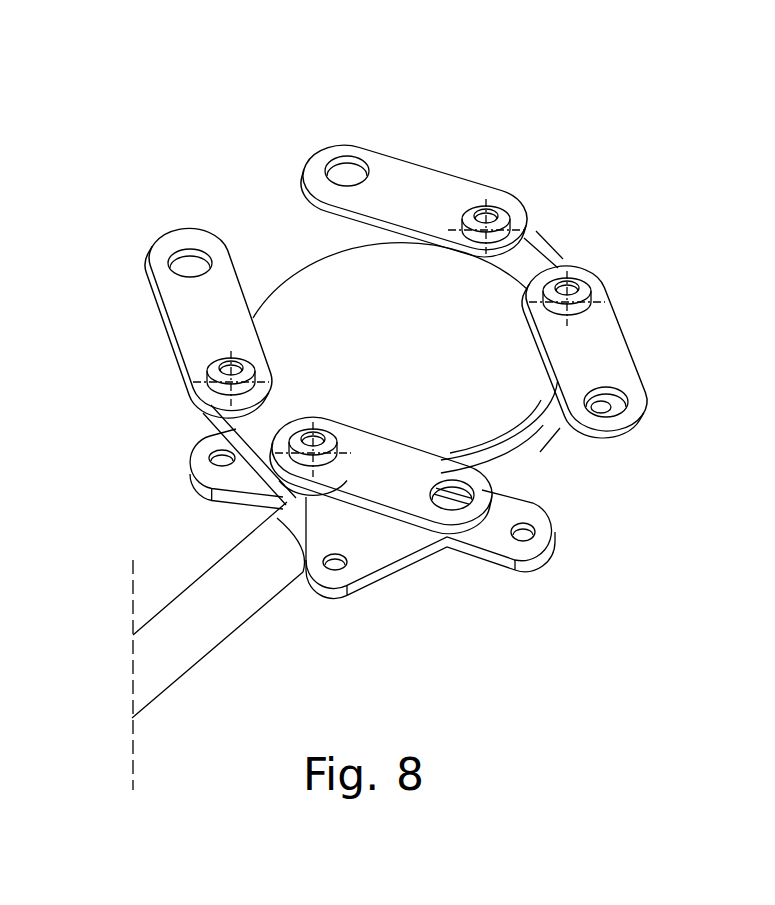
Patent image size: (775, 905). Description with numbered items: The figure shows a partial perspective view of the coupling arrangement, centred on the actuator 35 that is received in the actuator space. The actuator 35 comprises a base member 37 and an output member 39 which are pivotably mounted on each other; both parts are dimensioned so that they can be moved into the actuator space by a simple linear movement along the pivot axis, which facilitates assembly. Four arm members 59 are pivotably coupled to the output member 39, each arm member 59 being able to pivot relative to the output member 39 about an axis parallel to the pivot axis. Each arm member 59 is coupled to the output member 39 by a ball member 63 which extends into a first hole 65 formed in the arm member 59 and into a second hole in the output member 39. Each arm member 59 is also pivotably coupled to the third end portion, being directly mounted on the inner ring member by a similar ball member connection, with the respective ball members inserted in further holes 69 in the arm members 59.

The actuator 35 is at (434, 578).
The base member 37 is at (547, 470).
The output member 39 is at (433, 361).
The arm member 59 is at (422, 180).
The ball member 63 is at (573, 282).
The first hole 65 is at (592, 298).
The further hole 69 is at (630, 408).